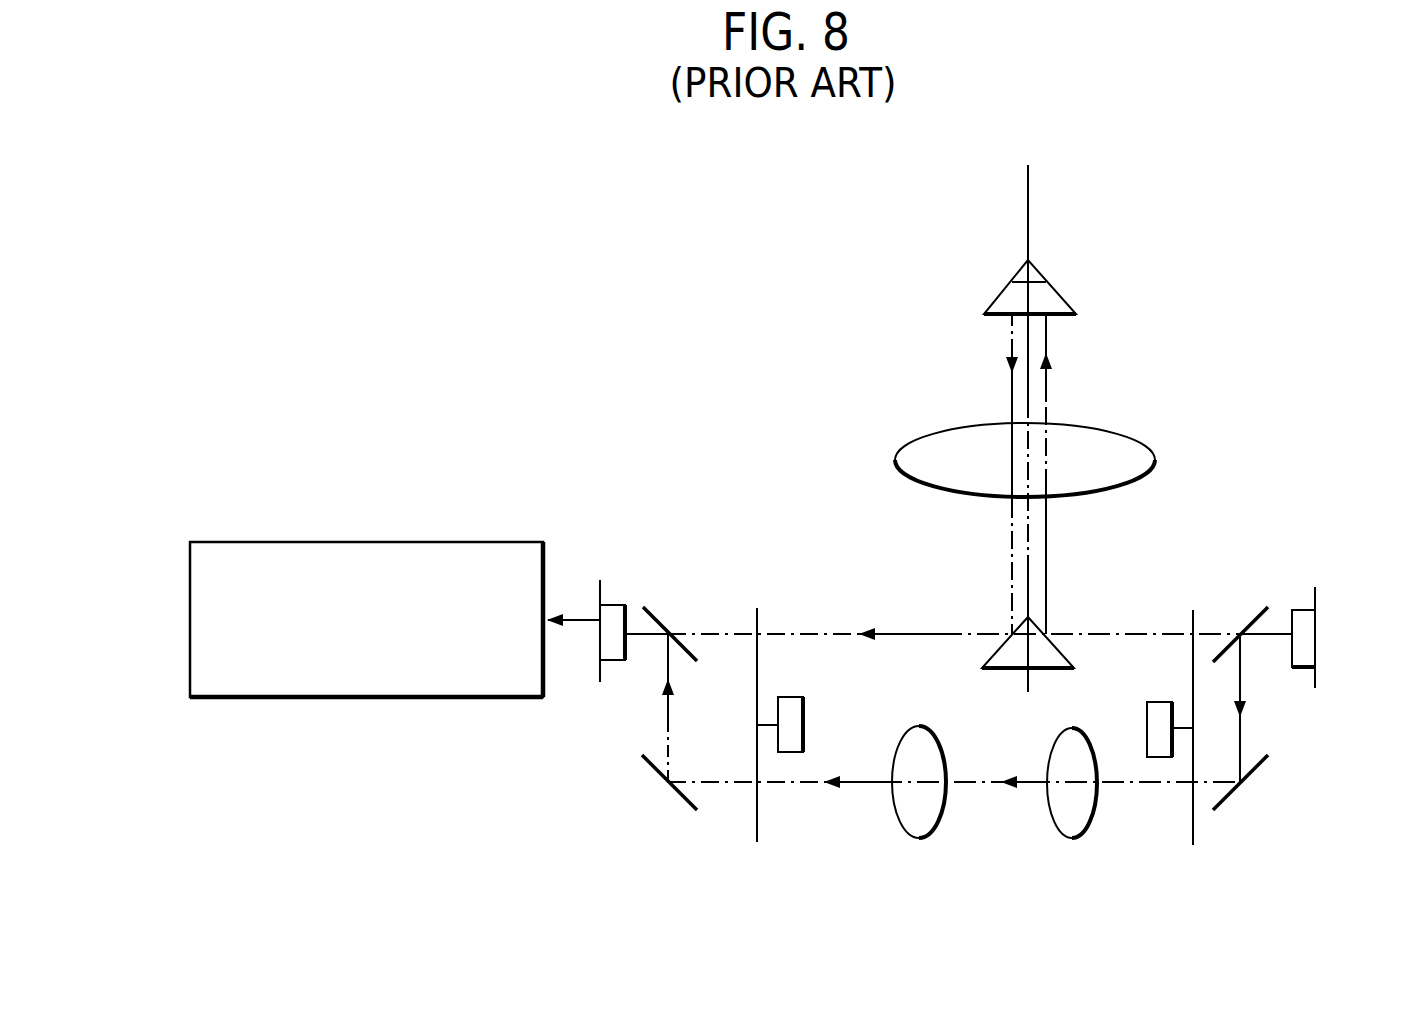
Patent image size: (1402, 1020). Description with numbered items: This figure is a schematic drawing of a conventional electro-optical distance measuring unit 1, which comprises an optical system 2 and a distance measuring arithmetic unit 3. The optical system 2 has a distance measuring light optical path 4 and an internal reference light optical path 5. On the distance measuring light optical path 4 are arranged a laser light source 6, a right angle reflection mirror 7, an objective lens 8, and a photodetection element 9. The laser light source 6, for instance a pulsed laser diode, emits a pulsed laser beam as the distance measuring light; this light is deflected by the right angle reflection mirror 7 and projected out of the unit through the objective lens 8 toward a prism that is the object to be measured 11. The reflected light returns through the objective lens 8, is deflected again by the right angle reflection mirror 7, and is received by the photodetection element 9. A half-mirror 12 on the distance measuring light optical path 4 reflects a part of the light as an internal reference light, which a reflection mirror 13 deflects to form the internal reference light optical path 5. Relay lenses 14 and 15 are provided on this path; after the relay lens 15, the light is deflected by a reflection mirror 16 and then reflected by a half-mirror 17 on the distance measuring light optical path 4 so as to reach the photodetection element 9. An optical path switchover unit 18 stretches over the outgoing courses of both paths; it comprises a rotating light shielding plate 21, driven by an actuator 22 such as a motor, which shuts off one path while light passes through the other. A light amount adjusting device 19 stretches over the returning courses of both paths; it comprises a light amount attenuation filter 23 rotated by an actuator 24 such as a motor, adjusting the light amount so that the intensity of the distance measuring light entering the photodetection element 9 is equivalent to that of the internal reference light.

The electro-optical distance measuring unit 1 is at (1212, 222).
The optical system 2 is at (888, 393).
The distance measuring arithmetic unit 3 is at (259, 536).
The distance measuring light optical path 4 is at (1029, 190).
The internal reference light optical path 5 is at (1033, 786).
The laser light source 6 is at (1316, 596).
The right angle reflection mirror 7 is at (1050, 672).
The objective lens 8 is at (1130, 432).
The photodetection element 9 is at (600, 597).
The object to be measured 11 is at (1045, 277).
The half-mirror 12 is at (1260, 611).
The reflection mirror 13 is at (1263, 765).
The relay lens 14 is at (1088, 827).
The relay lens 15 is at (943, 808).
The reflection mirror 16 is at (680, 803).
The half-mirror 17 is at (655, 618).
The optical path switchover unit 18 is at (1186, 689).
The light amount adjusting device 19 is at (806, 680).
The rotating light shielding plate 21 is at (1193, 822).
The actuator 22 is at (1162, 757).
The light amount attenuation filter 23 is at (757, 818).
The actuator 24 is at (803, 725).